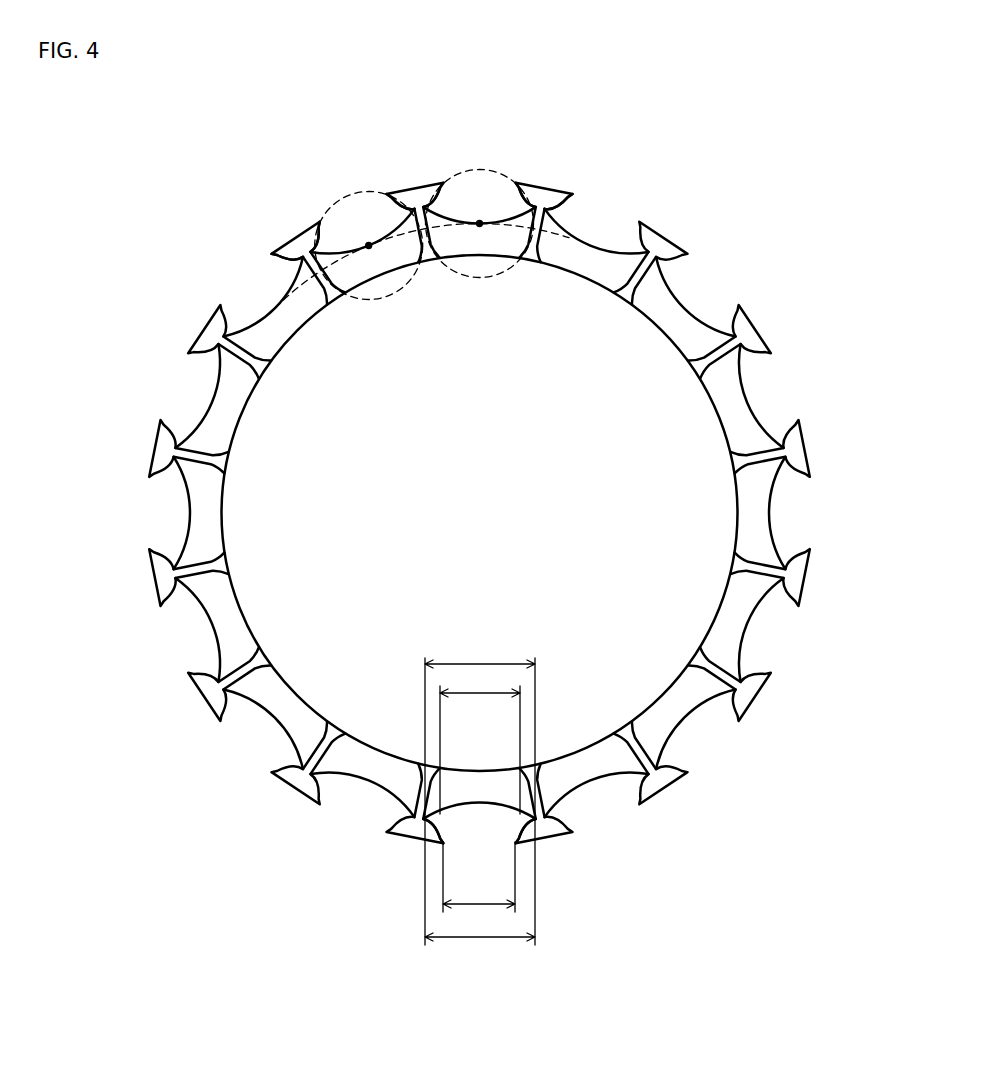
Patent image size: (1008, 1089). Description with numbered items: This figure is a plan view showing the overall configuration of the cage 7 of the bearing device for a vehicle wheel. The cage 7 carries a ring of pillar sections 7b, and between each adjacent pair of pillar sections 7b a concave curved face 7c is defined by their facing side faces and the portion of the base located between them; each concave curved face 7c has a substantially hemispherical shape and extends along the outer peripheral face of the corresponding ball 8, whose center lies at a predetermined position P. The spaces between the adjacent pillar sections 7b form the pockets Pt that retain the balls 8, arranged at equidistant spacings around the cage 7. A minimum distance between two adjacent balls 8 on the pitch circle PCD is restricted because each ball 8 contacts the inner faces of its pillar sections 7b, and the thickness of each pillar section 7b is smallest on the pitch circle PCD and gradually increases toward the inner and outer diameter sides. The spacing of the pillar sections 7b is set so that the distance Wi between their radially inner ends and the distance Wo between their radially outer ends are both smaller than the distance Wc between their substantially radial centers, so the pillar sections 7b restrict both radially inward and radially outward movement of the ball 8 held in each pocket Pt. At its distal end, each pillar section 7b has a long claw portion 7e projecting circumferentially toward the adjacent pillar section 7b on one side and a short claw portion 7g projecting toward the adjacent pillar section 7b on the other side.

The cage 7 is at (122, 151).
The pillar section 7b is at (297, 238).
The concave curved face 7c is at (293, 320).
The long claw portion 7e is at (321, 221).
The short claw portion 7g is at (273, 253).
The ball 8 is at (386, 298).
The predetermined position P is at (366, 251).
The pitch circle PCD is at (268, 298).
The pocket Pt is at (346, 179).
The distance between substantially radial centers of the pillar sections Wc is at (480, 790).
The distance between radially inner ends of the pillar sections Wi is at (480, 740).
The distance between radially outer ends of the pillar sections Wo is at (479, 877).